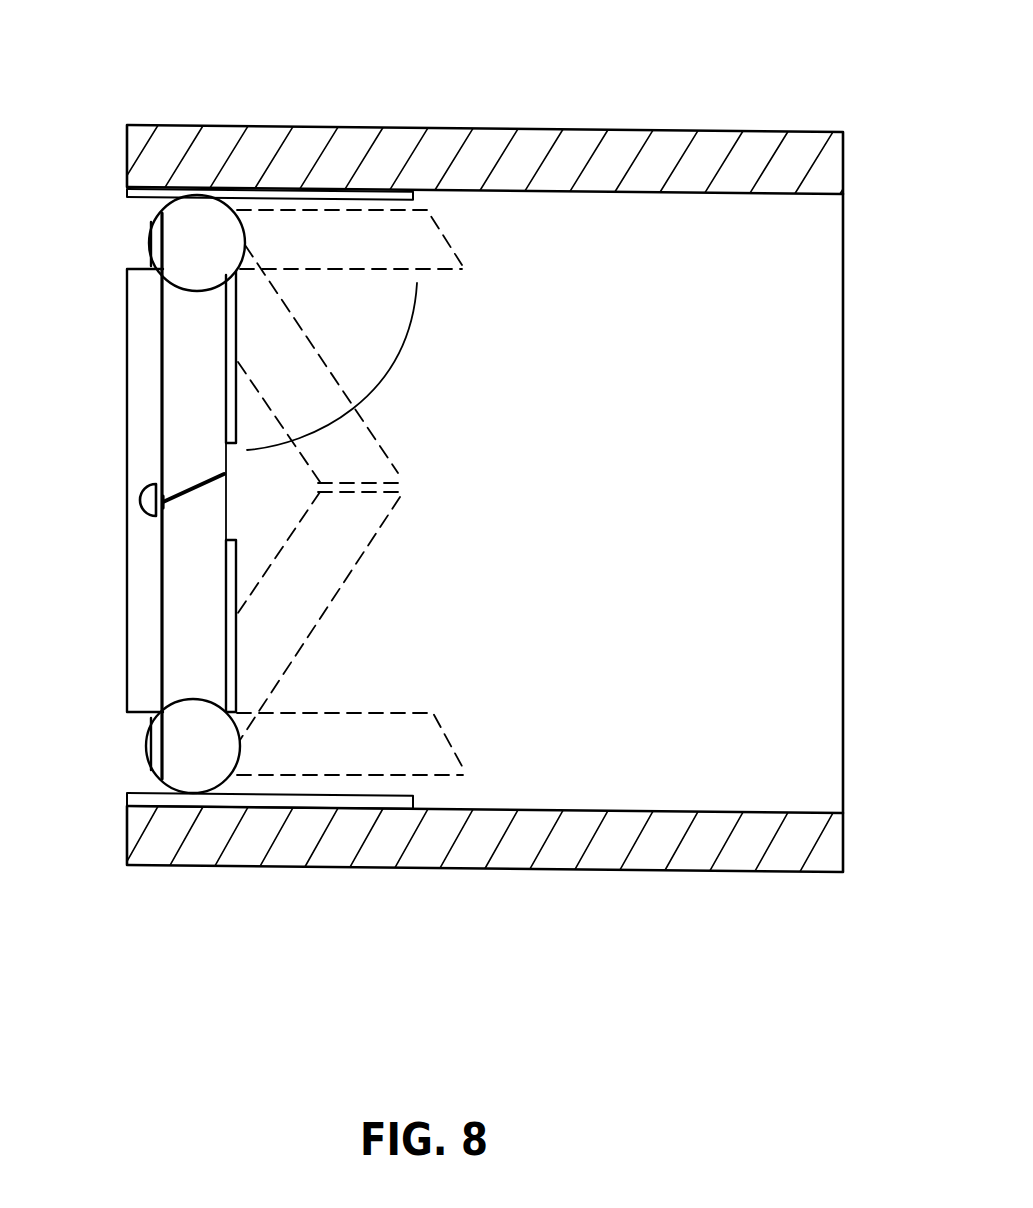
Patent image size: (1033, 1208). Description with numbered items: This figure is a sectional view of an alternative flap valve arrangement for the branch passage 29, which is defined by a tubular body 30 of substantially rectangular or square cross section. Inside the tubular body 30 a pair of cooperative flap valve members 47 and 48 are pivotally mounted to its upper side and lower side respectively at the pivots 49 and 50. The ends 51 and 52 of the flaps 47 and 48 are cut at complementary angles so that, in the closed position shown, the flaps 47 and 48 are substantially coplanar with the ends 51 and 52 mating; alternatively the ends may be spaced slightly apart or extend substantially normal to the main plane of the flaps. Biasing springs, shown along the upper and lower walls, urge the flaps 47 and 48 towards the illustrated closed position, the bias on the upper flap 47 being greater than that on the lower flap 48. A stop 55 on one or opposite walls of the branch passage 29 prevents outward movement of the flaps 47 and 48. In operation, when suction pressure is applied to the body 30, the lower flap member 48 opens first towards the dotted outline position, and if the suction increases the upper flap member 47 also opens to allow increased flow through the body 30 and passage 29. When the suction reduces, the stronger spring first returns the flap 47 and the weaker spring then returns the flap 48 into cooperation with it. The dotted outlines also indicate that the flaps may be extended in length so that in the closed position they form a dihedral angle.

The branch passage 29 is at (813, 353).
The tubular body 30 is at (680, 88).
The flap valve member 47 is at (180, 366).
The flap valve member 48 is at (175, 629).
The pivot 49 is at (147, 223).
The pivot 50 is at (124, 742).
The end of flap 51 is at (186, 488).
The end of flap 52 is at (188, 497).
The stop 55 is at (140, 493).